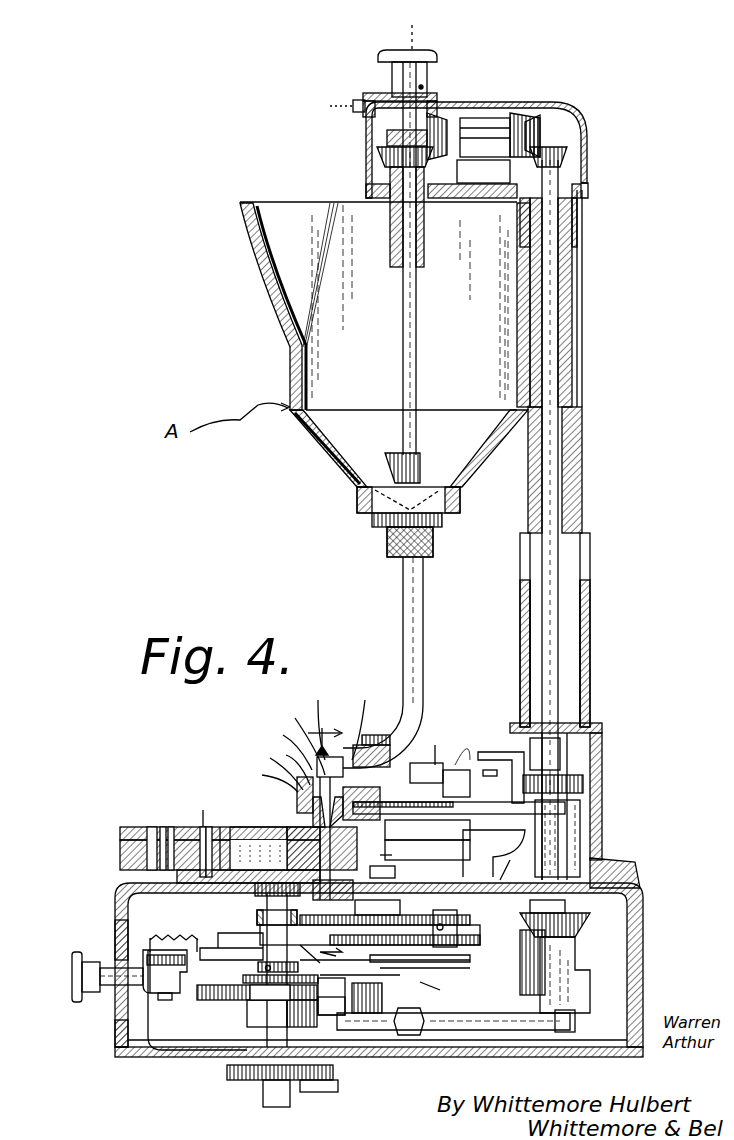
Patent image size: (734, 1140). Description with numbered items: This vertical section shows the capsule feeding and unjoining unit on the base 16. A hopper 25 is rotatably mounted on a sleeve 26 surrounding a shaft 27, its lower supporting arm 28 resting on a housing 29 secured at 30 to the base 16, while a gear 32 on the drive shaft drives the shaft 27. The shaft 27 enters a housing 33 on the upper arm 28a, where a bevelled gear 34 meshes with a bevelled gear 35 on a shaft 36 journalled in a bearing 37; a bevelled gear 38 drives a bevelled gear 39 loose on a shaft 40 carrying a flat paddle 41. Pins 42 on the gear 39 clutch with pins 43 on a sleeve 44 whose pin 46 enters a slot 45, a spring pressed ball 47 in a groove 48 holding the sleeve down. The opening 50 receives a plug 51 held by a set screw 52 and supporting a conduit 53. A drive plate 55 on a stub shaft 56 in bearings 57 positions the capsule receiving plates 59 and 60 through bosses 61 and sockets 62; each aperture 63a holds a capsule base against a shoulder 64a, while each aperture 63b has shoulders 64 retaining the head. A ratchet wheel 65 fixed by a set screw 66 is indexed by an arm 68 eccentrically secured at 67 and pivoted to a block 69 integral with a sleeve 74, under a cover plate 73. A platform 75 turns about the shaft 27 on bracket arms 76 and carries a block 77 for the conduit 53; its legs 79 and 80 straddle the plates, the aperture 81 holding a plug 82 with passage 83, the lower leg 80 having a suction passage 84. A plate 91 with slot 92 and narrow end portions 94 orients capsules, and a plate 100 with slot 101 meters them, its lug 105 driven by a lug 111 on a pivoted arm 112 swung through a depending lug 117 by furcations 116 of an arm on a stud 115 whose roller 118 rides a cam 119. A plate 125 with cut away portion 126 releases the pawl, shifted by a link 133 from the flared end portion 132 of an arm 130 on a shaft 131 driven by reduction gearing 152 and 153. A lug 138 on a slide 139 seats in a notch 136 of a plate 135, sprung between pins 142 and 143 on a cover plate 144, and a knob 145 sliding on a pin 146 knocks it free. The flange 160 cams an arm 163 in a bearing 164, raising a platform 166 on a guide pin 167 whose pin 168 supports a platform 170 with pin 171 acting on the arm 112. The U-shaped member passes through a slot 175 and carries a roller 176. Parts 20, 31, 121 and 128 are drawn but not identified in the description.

The base 16 is at (125, 1050).
The pipe 20 is at (590, 990).
The hopper 25 is at (290, 350).
The sleeve 26 is at (583, 340).
The shaft 27 is at (558, 300).
The lower supporting arm 28 is at (585, 433).
The upper arm 28a is at (588, 207).
The housing 29 is at (590, 525).
The securement 30 is at (632, 866).
The bevel gear 31 is at (590, 925).
The gear 32 is at (545, 945).
The housing 33 is at (587, 165).
The bevelled gear 34 is at (570, 150).
The bevelled gear 35 is at (545, 135).
The shaft 36 is at (517, 125).
The bearing 37 is at (480, 128).
The bevelled gear 38 is at (440, 118).
The bevelled gear 39 is at (390, 165).
The shaft 40 is at (416, 302).
The flat paddle 41 is at (415, 465).
The pins 42 is at (392, 152).
The pins 43 is at (392, 138).
The sleeve 44 is at (385, 85).
The slot 45 is at (422, 29).
The pin 46 is at (400, 73).
The spring pressed ball 47 is at (326, 102).
The groove 48 is at (423, 85).
The opening 50 is at (360, 500).
The plug 51 is at (378, 515).
The set screw 52 is at (460, 503).
The tube or conduit 53 is at (423, 660).
The drive plate 55 is at (180, 877).
The stub shaft 56 is at (267, 902).
The bearings 57 is at (257, 915).
The capsule receiving plate 59 is at (120, 858).
The capsule receiving plate 60 is at (120, 833).
The bosses 61 is at (222, 830).
The sockets 62 is at (213, 827).
The aperture 63a is at (143, 838).
The aperture 63b is at (163, 830).
The shoulders 64 is at (172, 830).
The shoulder 64a is at (381, 873).
The ratchet wheel 65 is at (234, 1008).
The set screw 66 is at (243, 972).
The eccentric securement 67 is at (573, 1021).
The arm 68 is at (500, 1062).
The block 69 is at (382, 1000).
The cover plate 73 is at (331, 1006).
The sleeve 74 is at (275, 1021).
The supporting platform 75 is at (560, 812).
The bracket arms 76 is at (580, 740).
The block 77 is at (372, 745).
The upper leg 79 is at (318, 820).
The lower leg 80 is at (360, 908).
The aperture 81 is at (298, 801).
The plug 82 is at (385, 806).
The passage 83 is at (285, 764).
The passage 84 is at (322, 895).
The plate 91 is at (289, 774).
The slot 92 is at (283, 744).
The narrow end portions 94 is at (329, 741).
The plate 100 is at (265, 767).
The slot 101 is at (175, 940).
The lug 105 is at (294, 735).
The lug 111 is at (322, 718).
The pivoted arm 112 is at (366, 718).
The stud 115 is at (486, 768).
The furcations 116 is at (456, 783).
The depending lug 117 is at (510, 760).
The roller 118 is at (545, 765).
The cam 119 is at (583, 786).
The rack 121 is at (370, 944).
The plate 125 is at (400, 975).
The cut away portion 126 is at (331, 996).
The pin 128 is at (441, 989).
The arm 130 is at (166, 962).
The shaft 131 is at (320, 1082).
The flared end portion 132 is at (465, 958).
The link 133 is at (430, 968).
The plate 135 is at (115, 952).
The notch 136 is at (150, 950).
The lug 138 is at (130, 985).
The slide 139 is at (150, 1015).
The pin 142 is at (231, 949).
The pin 143 is at (165, 971).
The cover plate 144 is at (178, 1003).
The knob 145 is at (75, 990).
The pin 146 is at (118, 1030).
The reduction gearing 152 is at (270, 1095).
The reduction gearing 153 is at (340, 1092).
The flange 160 is at (465, 925).
The arm 163 is at (515, 864).
The bearing 164 is at (505, 843).
The platform 166 is at (427, 850).
The guide pin 167 is at (486, 900).
The upstanding pin 168 is at (427, 830).
The platform 170 is at (439, 743).
The upstanding pin 171 is at (462, 758).
The slot 175 is at (293, 848).
The roller 176 is at (385, 913).